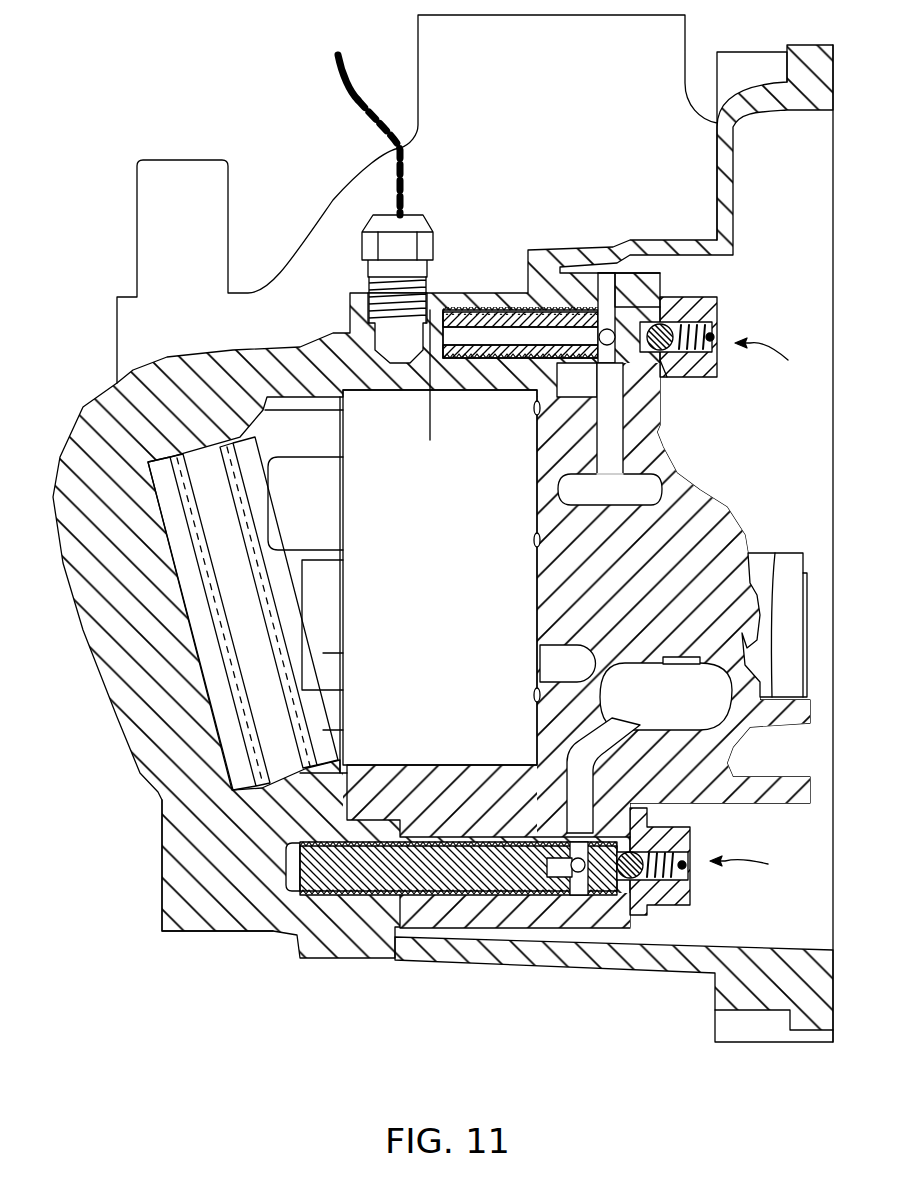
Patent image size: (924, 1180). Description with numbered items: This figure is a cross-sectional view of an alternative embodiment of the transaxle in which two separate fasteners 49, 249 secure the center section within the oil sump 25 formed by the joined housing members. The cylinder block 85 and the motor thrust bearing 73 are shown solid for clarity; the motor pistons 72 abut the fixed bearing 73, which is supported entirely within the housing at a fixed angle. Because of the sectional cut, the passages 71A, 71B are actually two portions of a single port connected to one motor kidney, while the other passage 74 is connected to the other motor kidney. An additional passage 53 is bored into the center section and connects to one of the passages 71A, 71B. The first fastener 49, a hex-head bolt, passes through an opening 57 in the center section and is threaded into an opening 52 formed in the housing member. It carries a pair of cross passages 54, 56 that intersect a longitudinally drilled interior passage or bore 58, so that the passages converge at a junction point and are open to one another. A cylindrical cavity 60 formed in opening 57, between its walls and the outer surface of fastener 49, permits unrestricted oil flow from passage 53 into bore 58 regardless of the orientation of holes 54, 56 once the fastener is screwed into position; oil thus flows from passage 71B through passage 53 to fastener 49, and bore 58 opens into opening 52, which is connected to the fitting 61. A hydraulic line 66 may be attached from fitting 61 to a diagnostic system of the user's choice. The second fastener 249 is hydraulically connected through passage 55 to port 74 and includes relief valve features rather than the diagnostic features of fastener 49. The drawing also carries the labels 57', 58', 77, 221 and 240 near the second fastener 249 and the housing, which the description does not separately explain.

The oil sump 25 is at (784, 915).
The fastener 49 is at (700, 300).
The opening 52 is at (430, 400).
The passage 53 is at (612, 440).
The cross passage 54 is at (607, 320).
The passage 55 is at (583, 783).
The cross passage 56 is at (607, 330).
The opening 57 is at (701, 387).
The seal 57' is at (515, 922).
The interior passage 58 is at (520, 304).
The bolt 58' is at (458, 924).
The cylindrical cavity 60 is at (658, 310).
The fitting 61 is at (438, 232).
The hydraulic line 66 is at (337, 80).
The passage 71A is at (557, 660).
The passage 71B is at (567, 483).
The motor pistons 72 is at (293, 510).
The motor thrust bearing 73 is at (173, 507).
The passage 74 is at (663, 705).
The direction arrow 77 is at (762, 608).
The cylinder block 85 is at (428, 593).
The body portion 221 is at (188, 880).
The caliper body 240 is at (700, 487).
The second fastener 249 is at (652, 908).